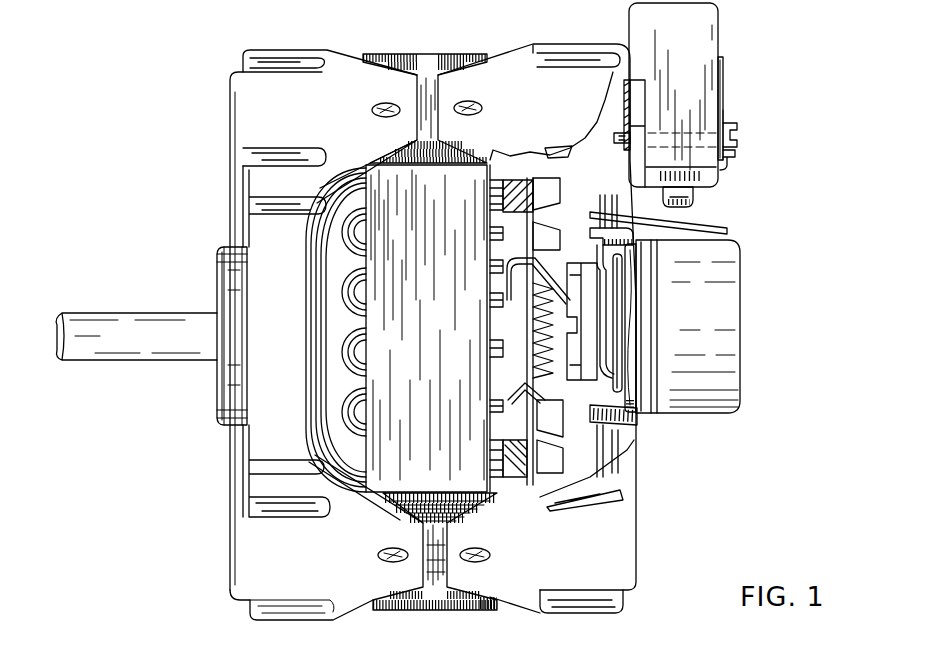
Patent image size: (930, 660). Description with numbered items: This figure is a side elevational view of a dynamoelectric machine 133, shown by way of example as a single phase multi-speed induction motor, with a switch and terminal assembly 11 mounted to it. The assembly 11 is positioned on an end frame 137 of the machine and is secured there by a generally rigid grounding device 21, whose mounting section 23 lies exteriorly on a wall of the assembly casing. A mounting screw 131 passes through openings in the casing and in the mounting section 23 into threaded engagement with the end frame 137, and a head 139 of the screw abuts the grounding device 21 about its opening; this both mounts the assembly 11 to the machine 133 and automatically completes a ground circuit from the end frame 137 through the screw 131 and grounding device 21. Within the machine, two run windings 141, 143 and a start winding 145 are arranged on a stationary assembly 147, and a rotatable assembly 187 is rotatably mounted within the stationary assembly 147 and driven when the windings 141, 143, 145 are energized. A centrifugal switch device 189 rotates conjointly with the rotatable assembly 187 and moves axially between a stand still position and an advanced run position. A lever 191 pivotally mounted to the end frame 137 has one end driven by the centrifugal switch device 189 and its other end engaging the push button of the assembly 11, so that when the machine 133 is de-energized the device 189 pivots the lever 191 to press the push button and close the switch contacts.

The switch and terminal assembly 11 is at (730, 24).
The grounding device 21 is at (733, 60).
The mounting section 23 is at (725, 88).
The mounting screw 131 is at (745, 129).
The dynamoelectric machine 133 is at (273, 44).
The end frame 137 is at (585, 50).
The head of the mounting screw 139 is at (733, 152).
The run winding 141 is at (327, 272).
The run winding 143 is at (256, 336).
The start winding 145 is at (253, 336).
The stationary assembly 147 is at (432, 378).
The rotatable assembly 187 is at (500, 186).
The centrifugal switch device 189 is at (567, 377).
The lever 191 is at (583, 213).